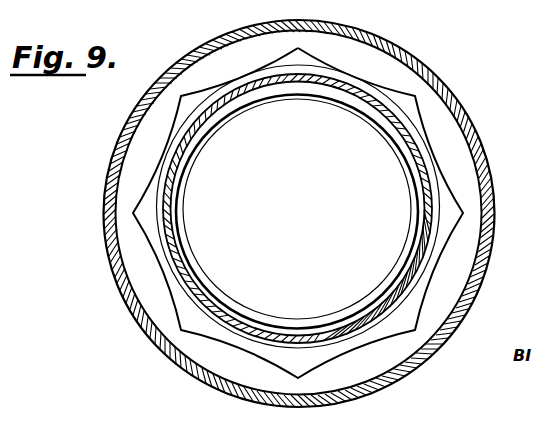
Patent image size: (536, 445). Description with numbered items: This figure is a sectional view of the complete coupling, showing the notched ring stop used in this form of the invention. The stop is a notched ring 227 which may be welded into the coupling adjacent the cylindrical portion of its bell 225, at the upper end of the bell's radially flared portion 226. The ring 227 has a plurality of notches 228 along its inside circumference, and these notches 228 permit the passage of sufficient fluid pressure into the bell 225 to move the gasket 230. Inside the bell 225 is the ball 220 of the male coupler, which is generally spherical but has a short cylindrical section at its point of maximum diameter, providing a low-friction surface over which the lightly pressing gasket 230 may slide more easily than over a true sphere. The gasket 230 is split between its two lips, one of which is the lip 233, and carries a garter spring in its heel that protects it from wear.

The ball 220 is at (175, 243).
The bell 225 is at (112, 158).
The radially flared portion 226 is at (402, 52).
The notched ring 227 is at (428, 97).
The notches 228 is at (412, 95).
The gasket 230 is at (194, 106).
The lip 233 is at (361, 88).